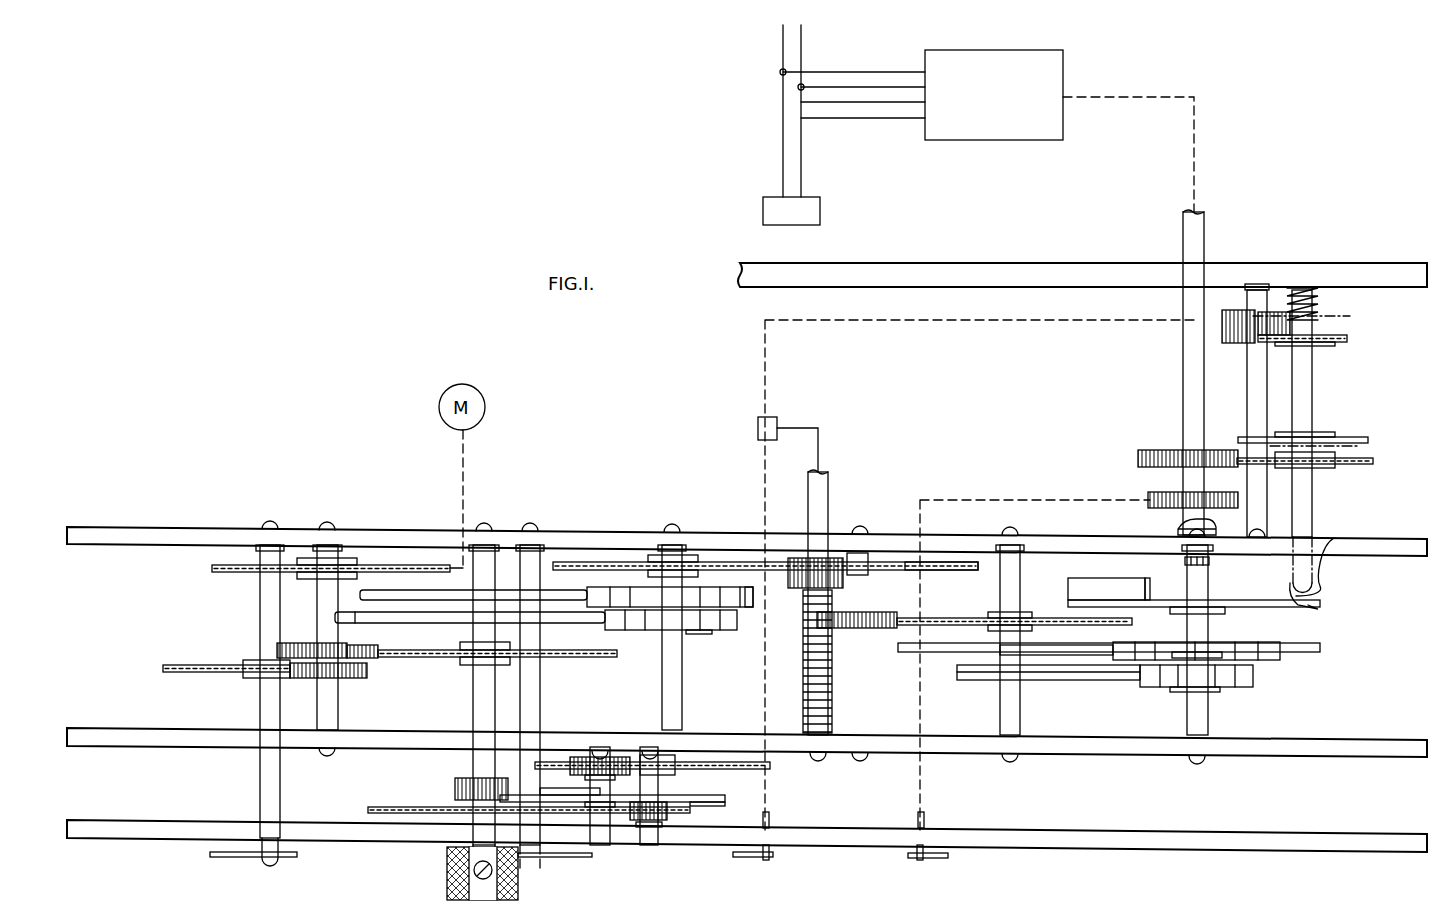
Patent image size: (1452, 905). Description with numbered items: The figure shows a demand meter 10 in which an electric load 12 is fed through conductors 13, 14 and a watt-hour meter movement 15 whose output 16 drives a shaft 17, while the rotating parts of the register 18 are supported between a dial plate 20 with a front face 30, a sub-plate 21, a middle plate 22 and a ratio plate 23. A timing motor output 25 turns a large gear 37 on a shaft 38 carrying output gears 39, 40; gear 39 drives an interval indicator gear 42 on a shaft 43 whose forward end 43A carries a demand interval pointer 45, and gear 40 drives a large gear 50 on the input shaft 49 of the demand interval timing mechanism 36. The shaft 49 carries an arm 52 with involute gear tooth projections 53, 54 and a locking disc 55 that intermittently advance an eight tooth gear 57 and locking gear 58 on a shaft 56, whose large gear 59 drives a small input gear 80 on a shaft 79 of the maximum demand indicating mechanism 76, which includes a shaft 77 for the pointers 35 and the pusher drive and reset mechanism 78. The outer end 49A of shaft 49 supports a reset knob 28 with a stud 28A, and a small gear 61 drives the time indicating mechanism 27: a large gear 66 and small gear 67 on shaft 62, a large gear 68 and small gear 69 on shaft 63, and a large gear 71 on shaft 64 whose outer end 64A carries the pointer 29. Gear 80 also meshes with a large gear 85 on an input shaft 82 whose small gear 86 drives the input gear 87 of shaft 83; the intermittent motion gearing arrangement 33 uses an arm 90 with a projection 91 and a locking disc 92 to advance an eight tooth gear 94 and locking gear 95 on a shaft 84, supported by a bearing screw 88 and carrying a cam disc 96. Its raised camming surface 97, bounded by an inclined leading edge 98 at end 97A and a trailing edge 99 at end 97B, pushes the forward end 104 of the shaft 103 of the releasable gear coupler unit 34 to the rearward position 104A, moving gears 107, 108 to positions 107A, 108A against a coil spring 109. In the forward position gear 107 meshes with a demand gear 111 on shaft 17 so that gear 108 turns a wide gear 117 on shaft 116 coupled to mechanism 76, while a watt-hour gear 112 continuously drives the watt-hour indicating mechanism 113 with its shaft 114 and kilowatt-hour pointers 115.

The demand meter 10 is at (1261, 183).
The electric load 12 is at (822, 206).
The conductor 13 is at (783, 49).
The conductor 14 is at (806, 60).
The watt-hour meter movement 15 is at (1064, 70).
The watt-hour meter movement output 16 is at (1192, 155).
The shaft 17 is at (1183, 230).
The register 18 is at (667, 475).
The dial plate 20 is at (133, 824).
The sub-plate 21 is at (122, 732).
The middle plate 22 is at (152, 530).
The ratio plate 23 is at (907, 272).
The timing motor output 25 is at (464, 447).
The time indicating mechanism 27 is at (678, 781).
The reset knob 28 is at (447, 865).
The stud 28A is at (478, 877).
The pointer 29 is at (562, 856).
The front face 30 is at (326, 841).
The intermittent motion gearing arrangement 33 is at (1070, 682).
The releasable gear coupler unit 34 is at (1330, 478).
The maximum demand indicating pointers 35 is at (762, 857).
The demand interval timing mechanism 36 is at (649, 655).
The large gear 37 is at (406, 564).
The shaft 38 is at (317, 633).
The output gear 39 is at (367, 674).
The output gear 40 is at (358, 644).
The interval indicator gear 42 is at (223, 673).
The shaft 43 is at (258, 600).
The forward end of shaft 43A is at (264, 864).
The demand interval pointer 45 is at (219, 856).
The input shaft 49 is at (472, 691).
The outer end of shaft 49A is at (448, 856).
The large gear 50 is at (580, 657).
The arm 52 is at (555, 622).
The single involute gear tooth projection 53 is at (334, 619).
The single involute gear tooth projection 54 is at (603, 629).
The locking disc 55 is at (358, 595).
The shaft 56 is at (682, 695).
The eight tooth gear 57 is at (693, 633).
The locking gear 58 is at (749, 608).
The large gear 59 is at (609, 562).
The small gear 61 is at (453, 787).
The shaft 62 is at (601, 847).
The shaft 63 is at (651, 845).
The shaft 64 is at (540, 695).
The outer end of shaft 64A is at (540, 871).
The large gear 66 is at (720, 801).
The small gear 67 is at (578, 744).
The large gear 68 is at (767, 769).
The small gear 69 is at (668, 812).
The large gear 71 is at (382, 806).
The maximum demand indicating mechanism 76 is at (1030, 322).
The shaft 77 is at (770, 816).
The pusher drive and reset mechanism 78 is at (757, 430).
The shaft 79 is at (830, 490).
The small input gear 80 is at (803, 558).
The input shaft 82 is at (862, 710).
The shaft 83 is at (999, 698).
The shaft 84 is at (1187, 717).
The large gear 85 is at (953, 575).
The small gear 86 is at (868, 612).
The large input gear 87 is at (955, 617).
The bearing screw 88 is at (1175, 534).
The arm 90 is at (1091, 682).
The single involute gear tooth projection 91 is at (1144, 688).
The locking disc 92 is at (1116, 645).
The eight tooth gear 94 is at (1230, 689).
The locking gear 95 is at (1284, 660).
The cam disc 96 is at (1321, 608).
The camming surface 97 is at (1072, 579).
The end of camming surface 97A is at (1238, 584).
The end of camming surface 97B is at (1146, 581).
The inclined leading edge 98 is at (1212, 598).
The trailing edge 99 is at (1179, 563).
The shaft 103 is at (1313, 390).
The forward end of shaft 104 is at (1310, 592).
The rearward position of shaft end 104A is at (1340, 558).
The gear 107 is at (1374, 462).
The rearward position of gear 107A is at (1356, 437).
The gear 108 is at (1347, 342).
The rearward position of gear 108A is at (1350, 318).
The coil spring 109 is at (1319, 299).
The demand gear 111 is at (1138, 460).
The watt-hour gear 112 is at (1148, 501).
The watt-hour indicating mechanism 113 is at (978, 499).
The shaft 114 is at (922, 817).
The kilowatt-hour pointers 115 is at (932, 859).
The shaft 116 is at (1250, 395).
The wide gear 117 is at (1238, 347).